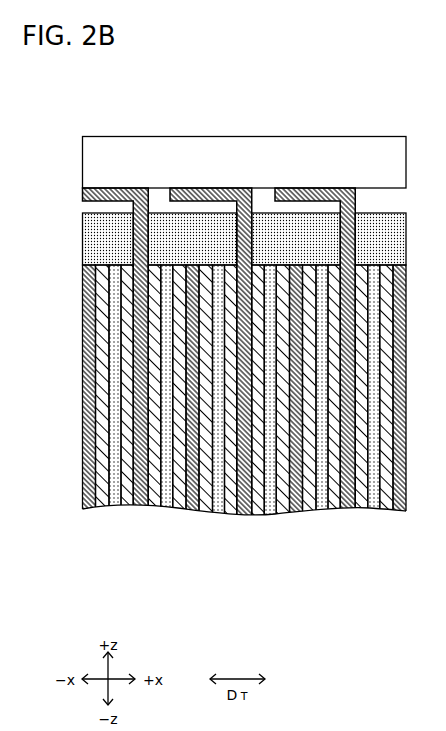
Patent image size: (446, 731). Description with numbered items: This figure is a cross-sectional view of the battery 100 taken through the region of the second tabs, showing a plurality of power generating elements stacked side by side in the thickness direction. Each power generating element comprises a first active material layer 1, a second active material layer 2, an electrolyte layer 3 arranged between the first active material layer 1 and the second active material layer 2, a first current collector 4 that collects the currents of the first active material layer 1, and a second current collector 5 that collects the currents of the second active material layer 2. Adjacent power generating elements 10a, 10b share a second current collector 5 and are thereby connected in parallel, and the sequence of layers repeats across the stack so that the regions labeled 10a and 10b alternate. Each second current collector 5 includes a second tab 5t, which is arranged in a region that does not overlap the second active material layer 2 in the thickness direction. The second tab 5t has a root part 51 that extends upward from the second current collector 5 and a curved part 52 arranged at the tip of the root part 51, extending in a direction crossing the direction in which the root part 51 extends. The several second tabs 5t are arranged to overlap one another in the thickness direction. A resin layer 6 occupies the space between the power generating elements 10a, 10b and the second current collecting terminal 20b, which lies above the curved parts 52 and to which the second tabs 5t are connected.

The battery 100 is at (313, 62).
The second current collecting terminal 20b is at (352, 148).
The second tab 5t is at (223, 86).
The curved part 52 is at (217, 196).
The root part 51 is at (243, 258).
The resin layer 6 is at (83, 226).
The power generating element 10a is at (90, 560).
The power generating element 10b is at (142, 560).
The first active material layer 1 is at (205, 506).
The second active material layer 2 is at (231, 506).
The electrolyte layer 3 is at (218, 506).
The first current collector 4 is at (192, 506).
The second current collector 5 is at (244, 506).